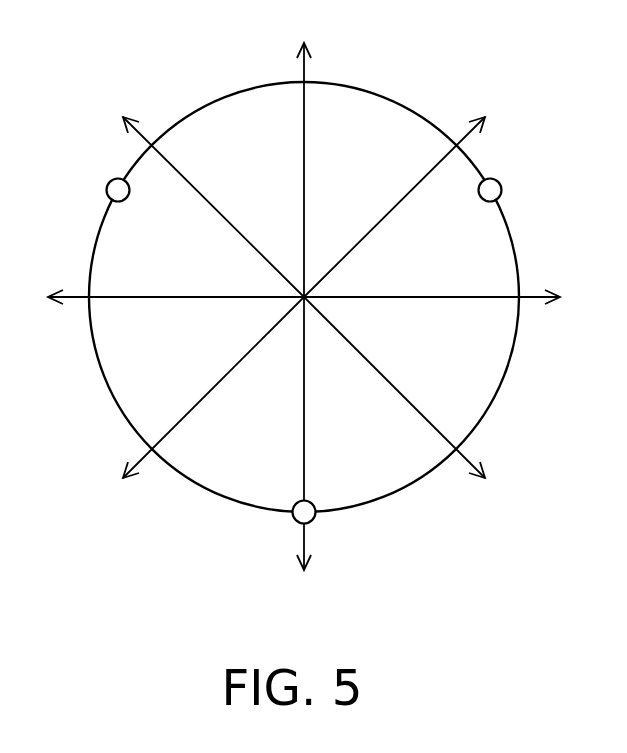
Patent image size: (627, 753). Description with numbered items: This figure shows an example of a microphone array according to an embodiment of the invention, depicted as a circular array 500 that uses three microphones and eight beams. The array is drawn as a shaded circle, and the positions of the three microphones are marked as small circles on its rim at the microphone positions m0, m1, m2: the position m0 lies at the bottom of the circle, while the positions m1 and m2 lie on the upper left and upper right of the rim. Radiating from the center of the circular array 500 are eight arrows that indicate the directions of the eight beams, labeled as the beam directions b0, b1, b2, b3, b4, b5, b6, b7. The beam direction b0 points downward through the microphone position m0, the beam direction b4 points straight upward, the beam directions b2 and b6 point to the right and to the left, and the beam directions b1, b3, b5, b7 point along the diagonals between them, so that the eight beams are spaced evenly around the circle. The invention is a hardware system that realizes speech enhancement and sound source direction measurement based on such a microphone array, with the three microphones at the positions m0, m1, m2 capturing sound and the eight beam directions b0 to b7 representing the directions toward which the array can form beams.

The circular array 500 is at (548, 47).
The beam direction b0 is at (305, 453).
The beam direction b1 is at (410, 404).
The beam direction b2 is at (449, 299).
The beam direction b3 is at (411, 194).
The beam direction b4 is at (304, 153).
The beam direction b5 is at (202, 191).
The beam direction b6 is at (159, 299).
The beam direction b7 is at (196, 402).
The microphone position m0 is at (326, 528).
The microphone position m1 is at (96, 186).
The microphone position m2 is at (512, 188).